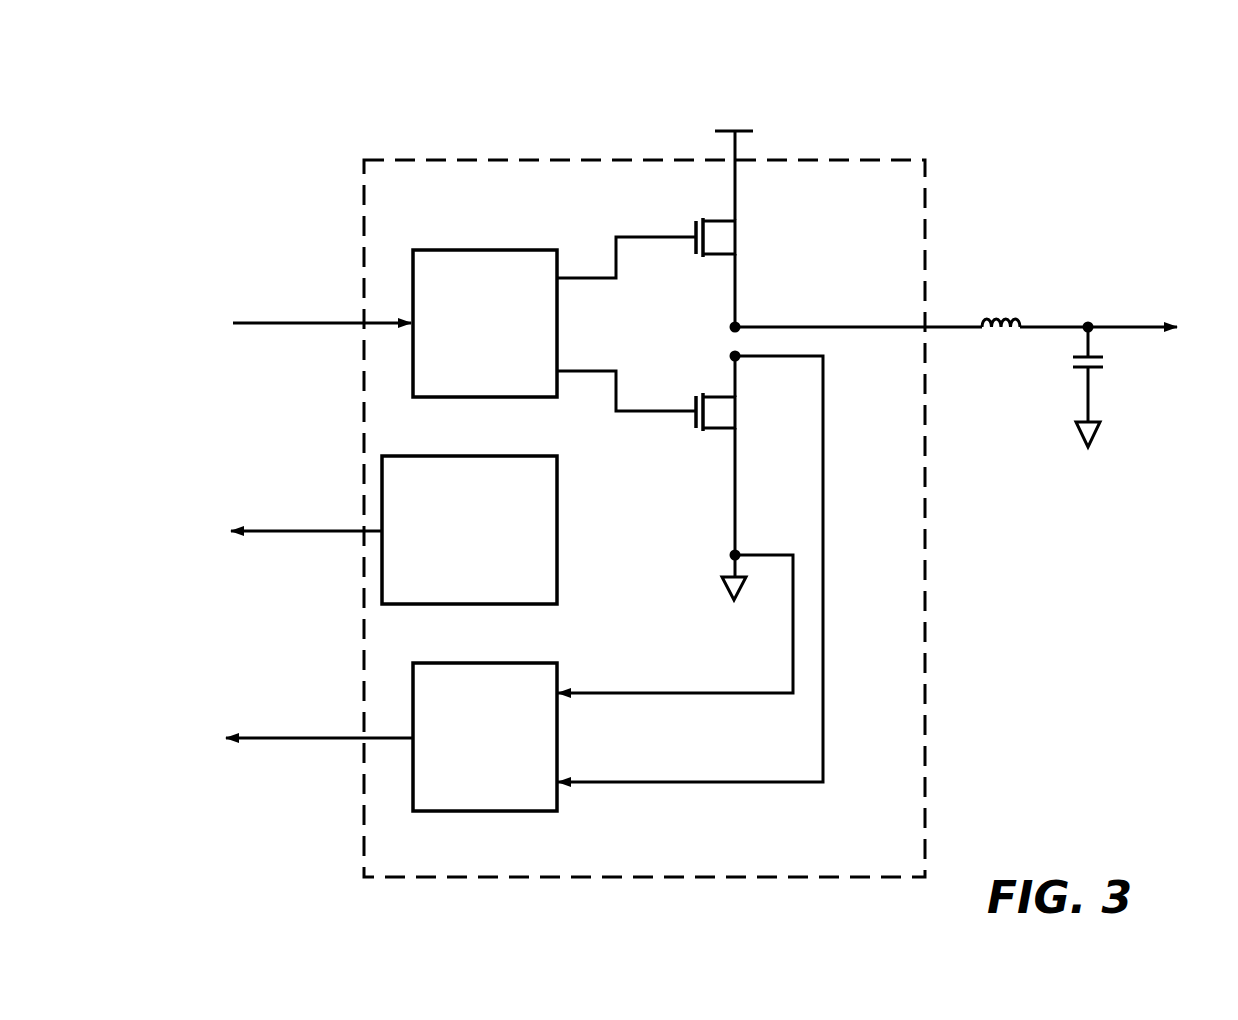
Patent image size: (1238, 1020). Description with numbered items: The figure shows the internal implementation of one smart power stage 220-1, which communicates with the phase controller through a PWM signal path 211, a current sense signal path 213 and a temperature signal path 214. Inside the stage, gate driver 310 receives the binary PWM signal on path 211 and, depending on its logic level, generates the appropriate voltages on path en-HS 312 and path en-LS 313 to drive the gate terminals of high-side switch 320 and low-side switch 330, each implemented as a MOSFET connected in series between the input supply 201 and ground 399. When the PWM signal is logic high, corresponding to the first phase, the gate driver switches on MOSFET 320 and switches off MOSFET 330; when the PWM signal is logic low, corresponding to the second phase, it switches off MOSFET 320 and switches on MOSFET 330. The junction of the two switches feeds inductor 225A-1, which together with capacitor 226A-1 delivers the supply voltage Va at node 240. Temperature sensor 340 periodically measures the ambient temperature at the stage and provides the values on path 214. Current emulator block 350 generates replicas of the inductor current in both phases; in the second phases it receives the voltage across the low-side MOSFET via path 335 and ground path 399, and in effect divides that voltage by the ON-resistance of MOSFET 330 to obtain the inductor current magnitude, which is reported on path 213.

The SPSA-1 220-1 is at (610, 82).
The input voltage Vin 201 is at (735, 128).
The signal/path PWMA-1 211 is at (295, 322).
The gate driver 310 is at (485, 323).
The path en-HS 312 is at (638, 236).
The path en-LS 313 is at (640, 413).
The high-side switch 320 is at (735, 238).
The low-side switch 330 is at (735, 411).
The path 335 is at (735, 355).
The ground path 399 is at (722, 586).
The temperature sensor 340 is at (469, 530).
The signal/path TMPA 214 is at (262, 528).
The current emulator block 350 is at (485, 737).
The signal/path CSA-1 213 is at (266, 735).
The inductor 225A-1 is at (1032, 280).
The node 240 is at (1160, 323).
The capacitor 226A-1 is at (1077, 370).